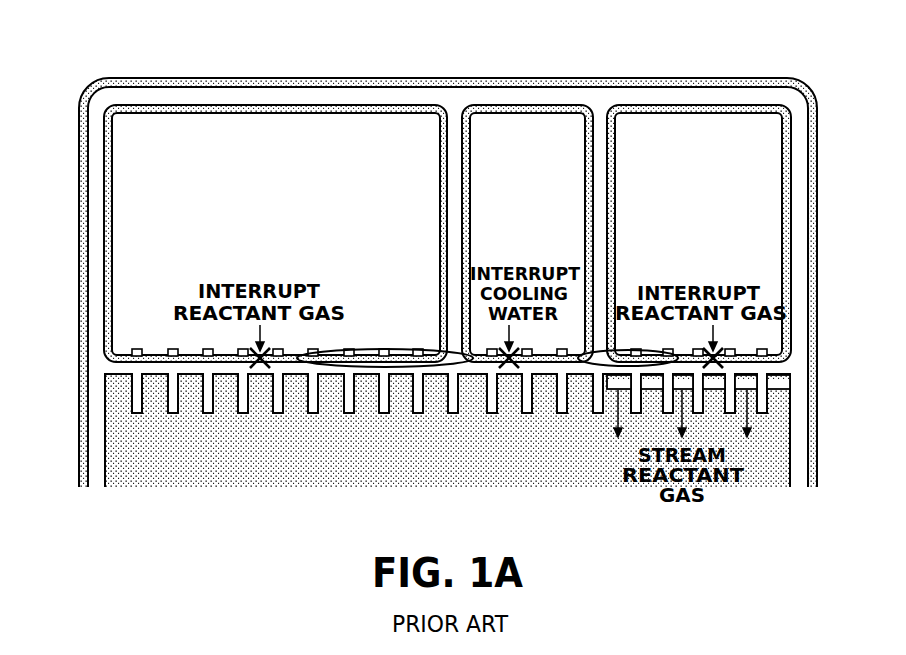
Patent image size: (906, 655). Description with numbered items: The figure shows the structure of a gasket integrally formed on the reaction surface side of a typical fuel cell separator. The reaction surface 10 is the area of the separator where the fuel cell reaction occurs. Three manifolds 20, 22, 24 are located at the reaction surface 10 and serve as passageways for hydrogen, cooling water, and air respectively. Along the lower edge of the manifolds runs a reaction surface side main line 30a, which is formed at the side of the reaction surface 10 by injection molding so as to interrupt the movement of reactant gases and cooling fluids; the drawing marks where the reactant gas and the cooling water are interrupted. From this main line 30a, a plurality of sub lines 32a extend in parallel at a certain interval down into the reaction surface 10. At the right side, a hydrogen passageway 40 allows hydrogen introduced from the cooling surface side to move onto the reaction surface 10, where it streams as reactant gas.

The reaction surface 10 is at (120, 443).
The manifold 20 is at (265, 128).
The manifold 22 is at (510, 128).
The manifold 24 is at (695, 138).
The reaction surface side main line 30a is at (397, 350).
The sub lines 32a is at (312, 413).
The hydrogen passageway 40 is at (788, 382).